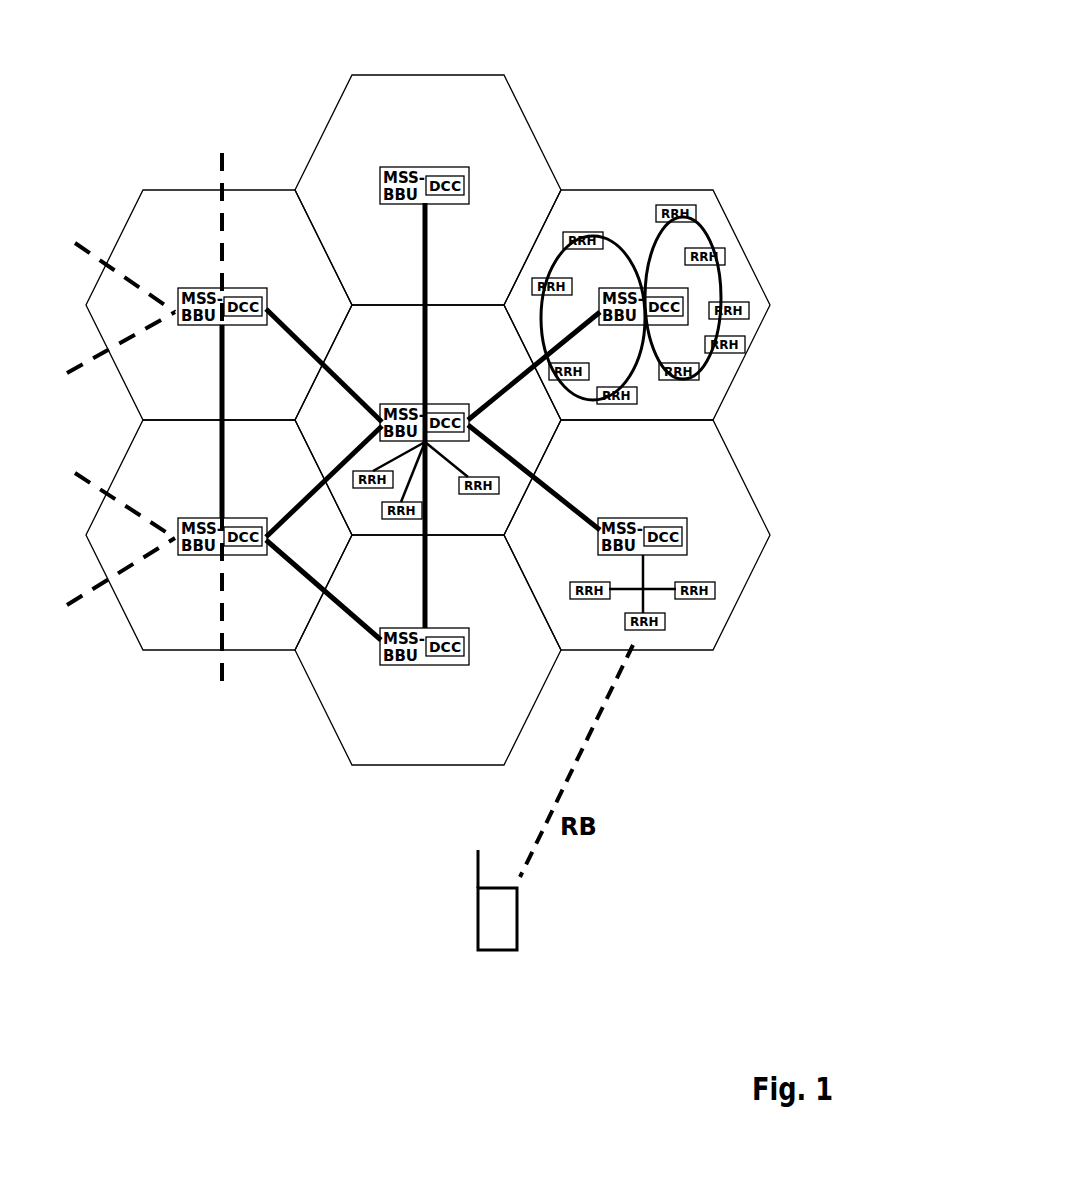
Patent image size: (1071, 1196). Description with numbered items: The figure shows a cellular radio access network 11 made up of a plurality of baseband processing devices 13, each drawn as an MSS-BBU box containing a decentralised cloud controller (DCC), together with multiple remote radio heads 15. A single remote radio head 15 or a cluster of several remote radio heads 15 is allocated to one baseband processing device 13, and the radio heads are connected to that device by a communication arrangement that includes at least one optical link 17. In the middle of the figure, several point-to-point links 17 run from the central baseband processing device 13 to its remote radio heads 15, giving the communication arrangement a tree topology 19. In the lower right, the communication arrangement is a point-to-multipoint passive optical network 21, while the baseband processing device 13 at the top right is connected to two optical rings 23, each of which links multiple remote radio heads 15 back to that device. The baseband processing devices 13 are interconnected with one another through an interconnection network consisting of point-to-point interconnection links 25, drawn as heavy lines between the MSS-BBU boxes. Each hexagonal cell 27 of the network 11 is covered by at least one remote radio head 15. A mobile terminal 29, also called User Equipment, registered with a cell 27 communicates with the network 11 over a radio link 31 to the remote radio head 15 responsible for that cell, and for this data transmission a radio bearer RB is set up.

The cellular radio access network 11 is at (150, 90).
The baseband processing device 13 is at (437, 167).
The remote radio head 15 is at (466, 495).
The optical link 17 is at (457, 460).
The tree topology 19 is at (398, 333).
The passive optical network 21 is at (742, 563).
The optical ring 23 is at (589, 192).
The interconnection link 25 is at (428, 277).
The cell 27 is at (378, 75).
The mobile terminal 29 is at (517, 925).
The radio link 31 is at (567, 782).